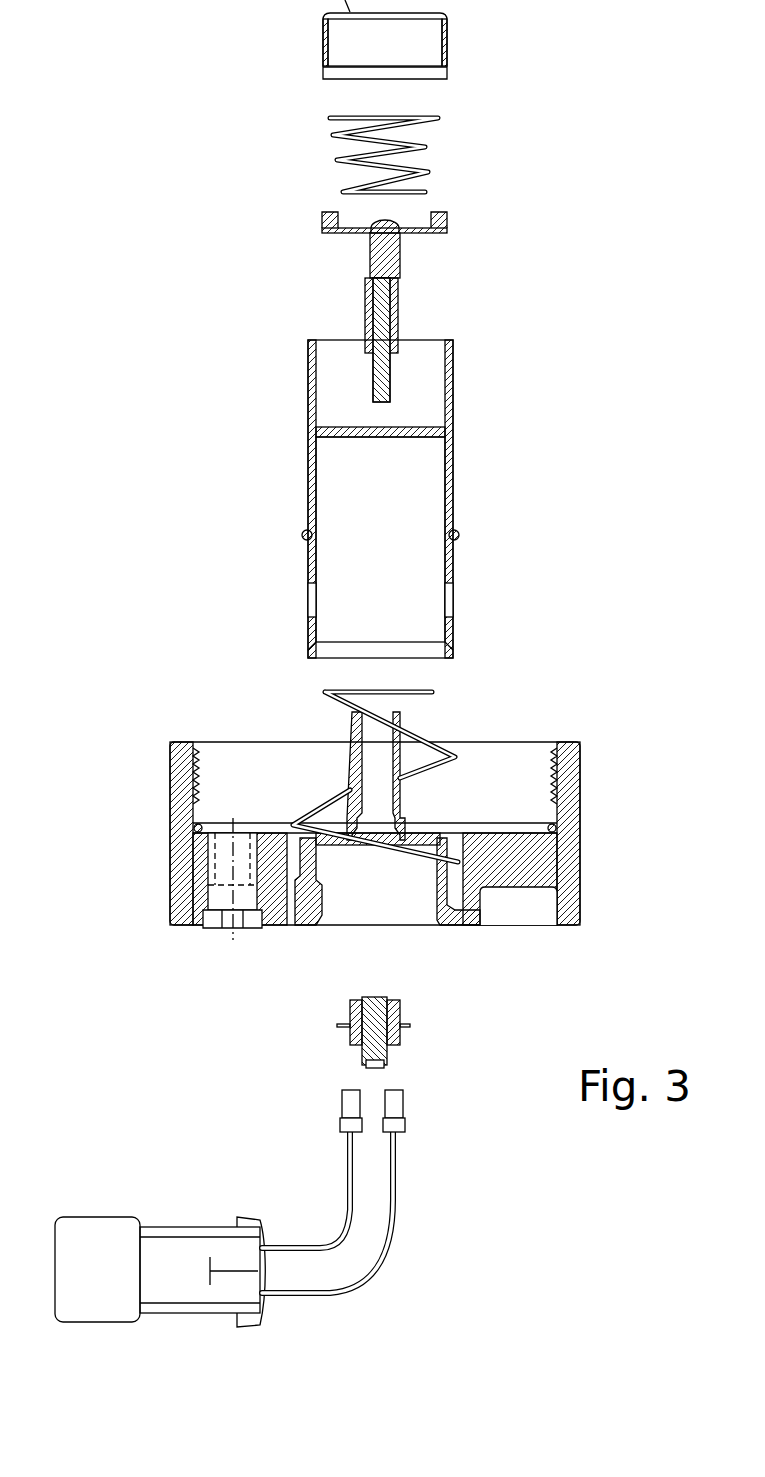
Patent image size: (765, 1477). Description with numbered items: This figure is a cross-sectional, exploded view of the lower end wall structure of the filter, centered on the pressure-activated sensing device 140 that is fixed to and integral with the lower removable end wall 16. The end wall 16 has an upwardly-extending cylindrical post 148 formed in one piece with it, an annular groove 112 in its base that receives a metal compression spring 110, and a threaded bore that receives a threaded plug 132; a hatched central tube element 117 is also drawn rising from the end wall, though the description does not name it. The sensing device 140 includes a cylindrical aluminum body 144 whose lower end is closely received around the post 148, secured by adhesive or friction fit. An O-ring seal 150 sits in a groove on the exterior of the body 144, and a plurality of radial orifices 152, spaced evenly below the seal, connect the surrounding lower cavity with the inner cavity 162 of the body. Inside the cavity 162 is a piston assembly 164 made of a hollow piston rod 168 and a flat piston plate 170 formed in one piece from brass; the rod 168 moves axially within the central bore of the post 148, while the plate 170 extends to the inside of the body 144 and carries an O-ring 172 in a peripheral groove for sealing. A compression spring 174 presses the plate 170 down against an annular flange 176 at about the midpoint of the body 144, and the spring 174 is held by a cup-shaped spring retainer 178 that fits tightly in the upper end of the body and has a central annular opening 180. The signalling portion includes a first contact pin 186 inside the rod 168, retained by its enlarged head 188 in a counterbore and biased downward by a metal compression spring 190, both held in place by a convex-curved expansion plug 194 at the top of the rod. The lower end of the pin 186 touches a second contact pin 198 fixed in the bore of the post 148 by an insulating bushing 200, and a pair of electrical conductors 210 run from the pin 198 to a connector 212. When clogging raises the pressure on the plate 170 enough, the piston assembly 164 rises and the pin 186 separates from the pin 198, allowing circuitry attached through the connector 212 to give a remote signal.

The second annular end wall 16 is at (578, 800).
The compression spring 110 is at (422, 733).
The annular channel or groove 112 is at (462, 880).
The valve stem tube 117 is at (375, 748).
The threaded plug 132 is at (225, 930).
The pressure-activated sensing device 140 is at (385, 499).
The cylindrical body 144 is at (308, 478).
The cylindrical post 148 is at (445, 860).
The O-ring seal 150 is at (455, 535).
The radial orifices 152 is at (312, 600).
The inner cavity 162 is at (415, 480).
The piston assembly 164 is at (432, 258).
The hollow piston rod 168 is at (366, 300).
The piston head or plate 170 is at (410, 214).
The O-ring 172 is at (447, 220).
The compression spring 174 is at (425, 150).
The annular flange 176 is at (316, 425).
The cup-shaped spring retainer 178 is at (447, 42).
The central annular opening 180 is at (322, 0).
The first metal contact pin 186 is at (380, 372).
The enlarged head 188 is at (393, 282).
The metal compression spring 190 is at (378, 245).
The expansion plug 194 is at (375, 222).
The second metal contact pin 198 is at (380, 998).
The insulating bushing 200 is at (352, 1030).
The electrical conductors 210 is at (395, 1183).
The connector 212 is at (110, 1232).